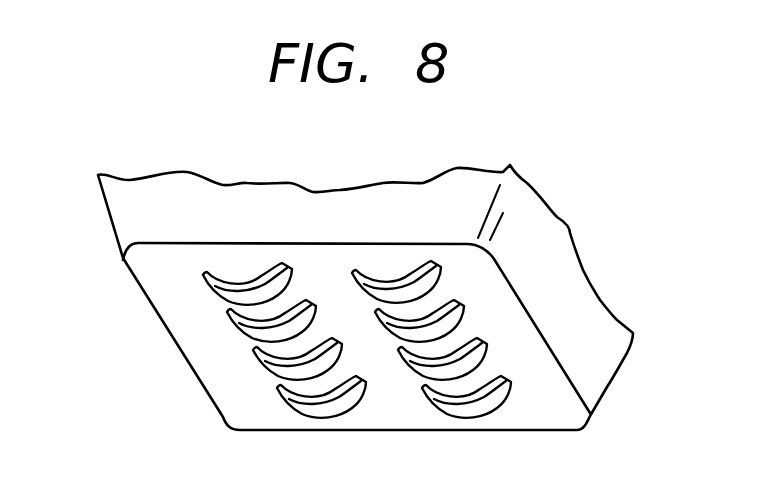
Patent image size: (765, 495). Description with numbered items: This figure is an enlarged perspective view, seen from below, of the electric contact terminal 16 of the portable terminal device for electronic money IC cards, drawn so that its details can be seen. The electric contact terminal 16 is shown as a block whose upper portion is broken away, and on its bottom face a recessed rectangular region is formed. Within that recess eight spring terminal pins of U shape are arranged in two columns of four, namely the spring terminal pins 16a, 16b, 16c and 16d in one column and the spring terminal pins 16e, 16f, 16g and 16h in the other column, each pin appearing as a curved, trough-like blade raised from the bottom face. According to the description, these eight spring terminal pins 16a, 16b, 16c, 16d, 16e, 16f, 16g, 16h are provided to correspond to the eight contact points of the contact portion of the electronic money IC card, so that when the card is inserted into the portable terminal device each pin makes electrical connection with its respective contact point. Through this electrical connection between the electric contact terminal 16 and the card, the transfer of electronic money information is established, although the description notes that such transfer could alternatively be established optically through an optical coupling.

The electric contact terminal 16 is at (537, 219).
The spring terminal pin 16a is at (215, 297).
The spring terminal pin 16b is at (243, 333).
The spring terminal pin 16c is at (270, 370).
The spring terminal pin 16d is at (293, 407).
The spring terminal pin 16e is at (435, 279).
The spring terminal pin 16f is at (453, 318).
The spring terminal pin 16g is at (480, 357).
The spring terminal pin 16h is at (507, 393).